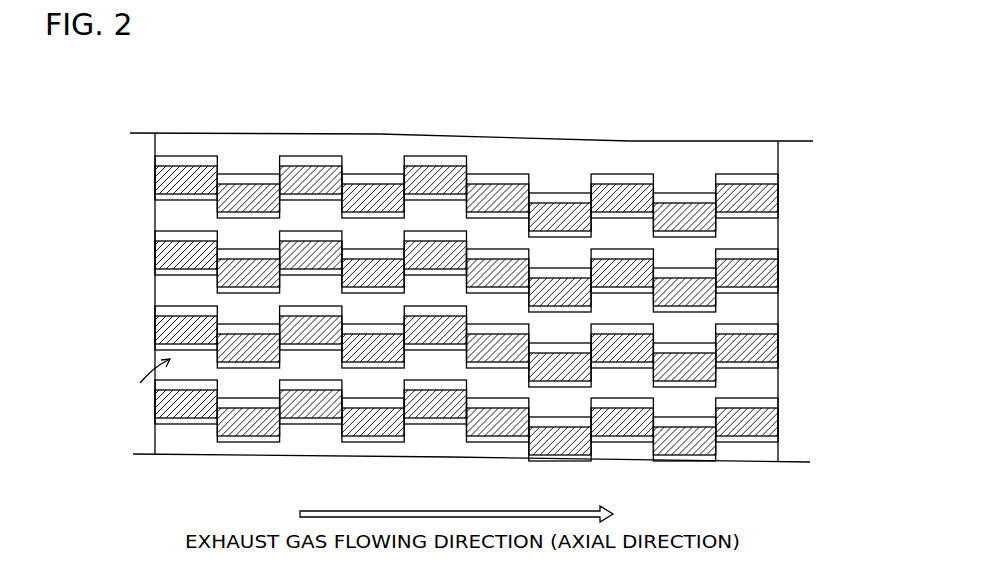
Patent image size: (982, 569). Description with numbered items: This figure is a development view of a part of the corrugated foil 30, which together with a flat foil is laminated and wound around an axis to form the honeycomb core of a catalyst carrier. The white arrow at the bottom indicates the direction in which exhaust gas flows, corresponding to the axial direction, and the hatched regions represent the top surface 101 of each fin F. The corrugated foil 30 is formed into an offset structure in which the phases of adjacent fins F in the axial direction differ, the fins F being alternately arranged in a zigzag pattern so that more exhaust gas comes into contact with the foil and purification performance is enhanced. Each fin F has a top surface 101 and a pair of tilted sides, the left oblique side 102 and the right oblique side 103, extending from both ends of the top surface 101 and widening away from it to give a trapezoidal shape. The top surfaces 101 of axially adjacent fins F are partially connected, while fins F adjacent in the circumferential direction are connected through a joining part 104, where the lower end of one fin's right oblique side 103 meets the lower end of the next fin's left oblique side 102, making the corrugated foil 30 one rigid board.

The corrugated foil 30 is at (797, 223).
The top surface 101 is at (170, 322).
The left oblique side 102 is at (168, 307).
The right oblique side 103 is at (168, 349).
The joining part 104 is at (168, 288).
The fin F is at (137, 401).